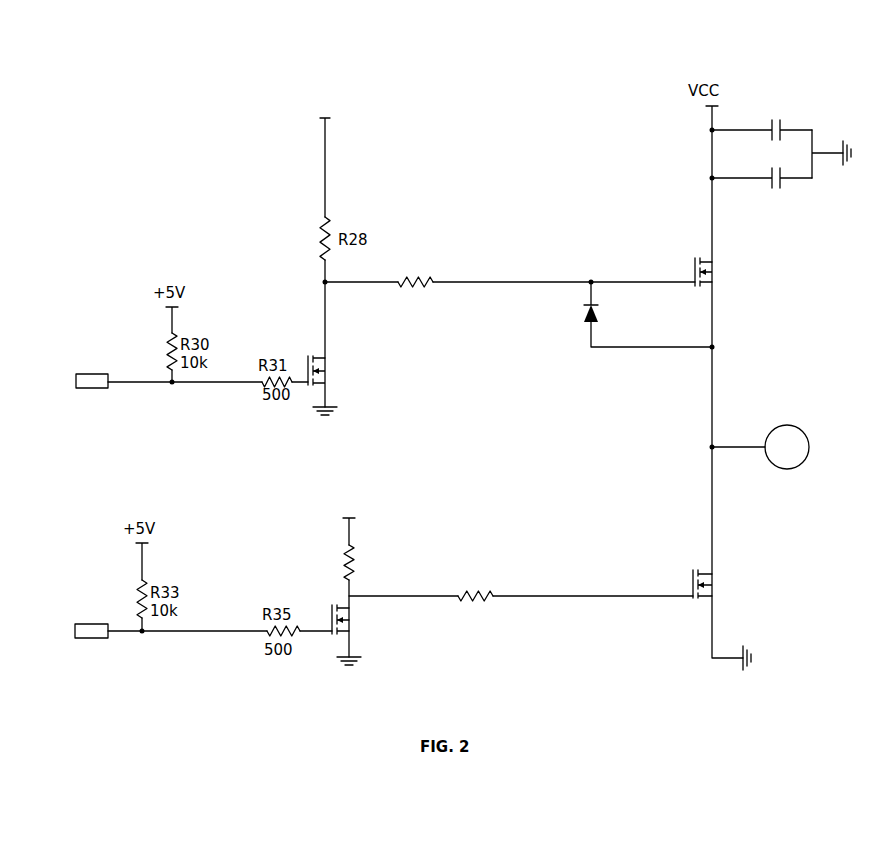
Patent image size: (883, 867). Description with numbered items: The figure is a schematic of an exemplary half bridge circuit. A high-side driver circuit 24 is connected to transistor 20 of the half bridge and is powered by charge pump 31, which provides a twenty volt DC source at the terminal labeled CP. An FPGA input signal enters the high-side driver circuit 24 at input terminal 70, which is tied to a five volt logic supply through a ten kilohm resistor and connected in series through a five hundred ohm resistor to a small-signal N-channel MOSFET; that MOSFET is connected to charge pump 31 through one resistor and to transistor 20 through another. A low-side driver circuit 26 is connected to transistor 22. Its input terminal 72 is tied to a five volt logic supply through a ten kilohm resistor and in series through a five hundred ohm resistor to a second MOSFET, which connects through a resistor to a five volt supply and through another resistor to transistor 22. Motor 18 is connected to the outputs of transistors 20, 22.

The charge pump 31 is at (338, 88).
The input terminal 70 is at (93, 373).
The input terminal 72 is at (93, 623).
The transistor 20 is at (718, 259).
The transistor 22 is at (718, 569).
The high-side driver circuit 24 is at (483, 344).
The low-side driver circuit 26 is at (483, 502).
The motor 18 is at (808, 433).